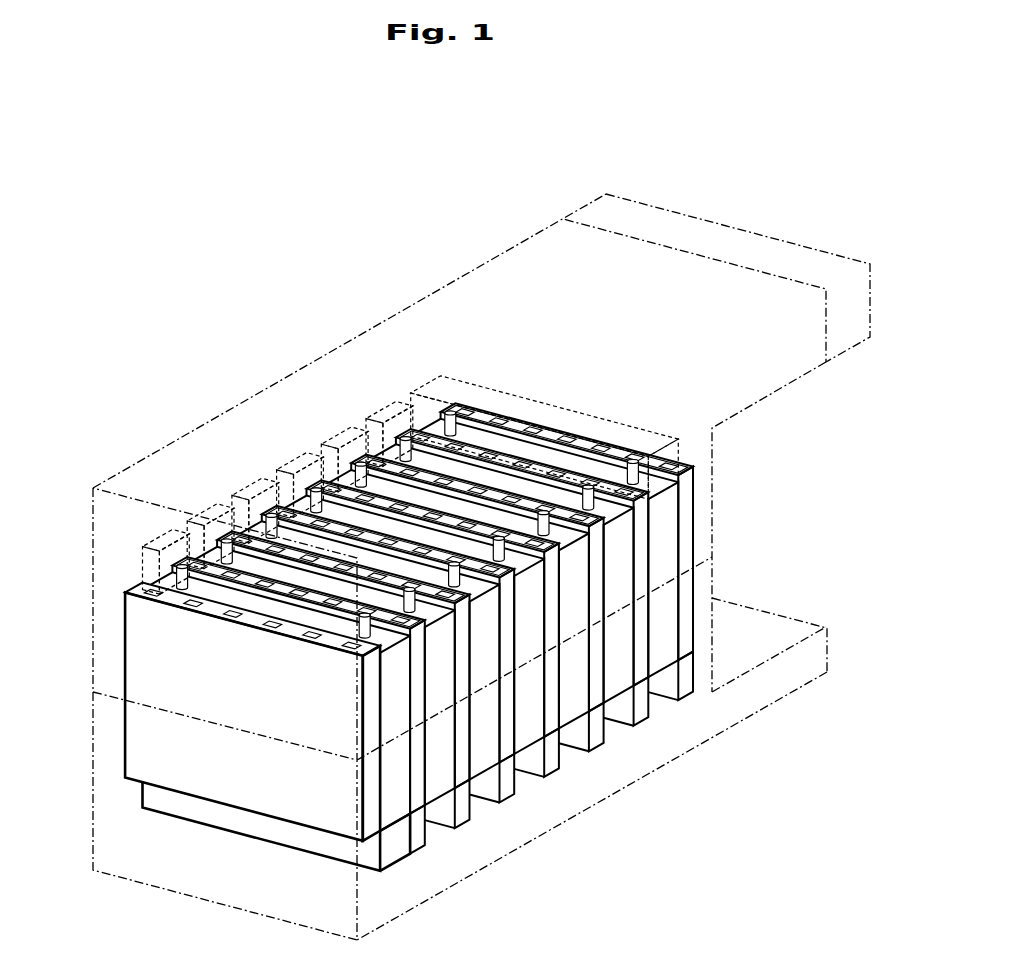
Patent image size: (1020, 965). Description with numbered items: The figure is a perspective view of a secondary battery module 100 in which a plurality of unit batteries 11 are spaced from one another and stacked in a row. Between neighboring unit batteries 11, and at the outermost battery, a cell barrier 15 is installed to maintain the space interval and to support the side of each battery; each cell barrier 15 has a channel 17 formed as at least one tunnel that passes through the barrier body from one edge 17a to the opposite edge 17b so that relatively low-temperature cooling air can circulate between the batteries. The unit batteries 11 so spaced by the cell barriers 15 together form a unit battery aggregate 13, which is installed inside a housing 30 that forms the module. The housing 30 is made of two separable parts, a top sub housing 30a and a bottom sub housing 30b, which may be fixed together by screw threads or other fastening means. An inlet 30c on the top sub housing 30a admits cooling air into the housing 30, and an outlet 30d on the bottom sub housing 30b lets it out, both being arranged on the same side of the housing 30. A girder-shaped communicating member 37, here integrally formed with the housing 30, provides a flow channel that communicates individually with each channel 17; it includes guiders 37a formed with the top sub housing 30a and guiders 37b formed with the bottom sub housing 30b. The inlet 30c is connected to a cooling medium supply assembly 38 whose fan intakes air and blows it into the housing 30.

The secondary battery module 100 is at (447, 126).
The unit battery 11 is at (490, 757).
The unit battery aggregate 13 is at (537, 747).
The cell barrier 15 is at (413, 775).
The channel 17 is at (200, 612).
The edge 17a is at (125, 592).
The edge 17b is at (217, 803).
The housing 30 is at (238, 340).
The top sub housing 30a is at (333, 349).
The bottom sub housing 30b is at (688, 750).
The inlet 30c is at (831, 340).
The outlet 30d is at (830, 641).
The communicating member 37 is at (286, 456).
The guider 37a is at (212, 507).
The guider 37b is at (567, 760).
The cooling medium supply assembly 38 is at (722, 232).